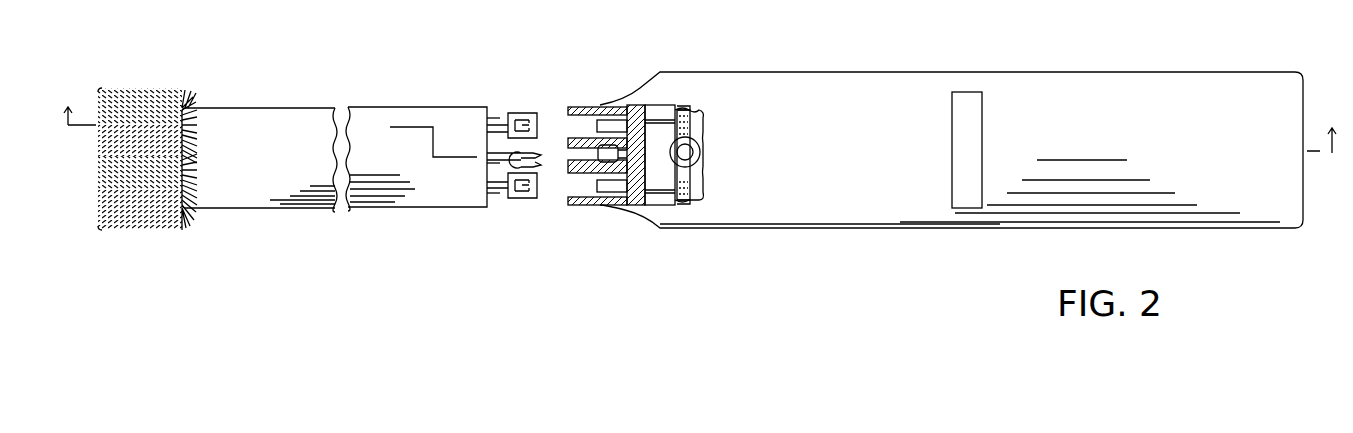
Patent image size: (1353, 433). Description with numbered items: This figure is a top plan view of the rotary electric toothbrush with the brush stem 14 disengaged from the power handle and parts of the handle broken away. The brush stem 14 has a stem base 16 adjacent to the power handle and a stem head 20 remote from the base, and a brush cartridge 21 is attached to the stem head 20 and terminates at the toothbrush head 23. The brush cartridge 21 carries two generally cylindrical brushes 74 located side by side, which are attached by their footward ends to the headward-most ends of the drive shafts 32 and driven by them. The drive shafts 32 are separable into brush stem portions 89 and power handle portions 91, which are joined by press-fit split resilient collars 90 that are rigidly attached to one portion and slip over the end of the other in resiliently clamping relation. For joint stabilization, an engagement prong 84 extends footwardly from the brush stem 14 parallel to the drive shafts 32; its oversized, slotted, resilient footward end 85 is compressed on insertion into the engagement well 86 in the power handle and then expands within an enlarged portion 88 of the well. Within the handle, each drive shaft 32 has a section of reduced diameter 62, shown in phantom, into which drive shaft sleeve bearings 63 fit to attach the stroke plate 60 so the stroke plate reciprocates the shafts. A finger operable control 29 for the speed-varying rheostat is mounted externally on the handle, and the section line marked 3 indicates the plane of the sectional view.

The section line 3- 3 is at (698, 118).
The brush stem 14 is at (290, 107).
The stem base 16 is at (407, 107).
The stem head 20 is at (225, 107).
The brush cartridge 21 is at (124, 235).
The toothbrush head 23 is at (95, 95).
The finger operable control 29 is at (967, 92).
The drive shafts 32 is at (503, 193).
The stroke plate 60 is at (692, 143).
The section of reduced diameter 62 is at (677, 120).
The drive shaft sleeve bearings 63 is at (687, 113).
The cylindrical brushes 74 is at (160, 95).
The engagement prong 84 is at (492, 163).
The footward end 85 is at (537, 143).
The engagement well 86 is at (563, 180).
The enlarged portion 88 is at (605, 167).
The brush stem portions 89 is at (493, 118).
The split resilient collars 90 is at (527, 112).
The power handle portions 91 is at (657, 118).